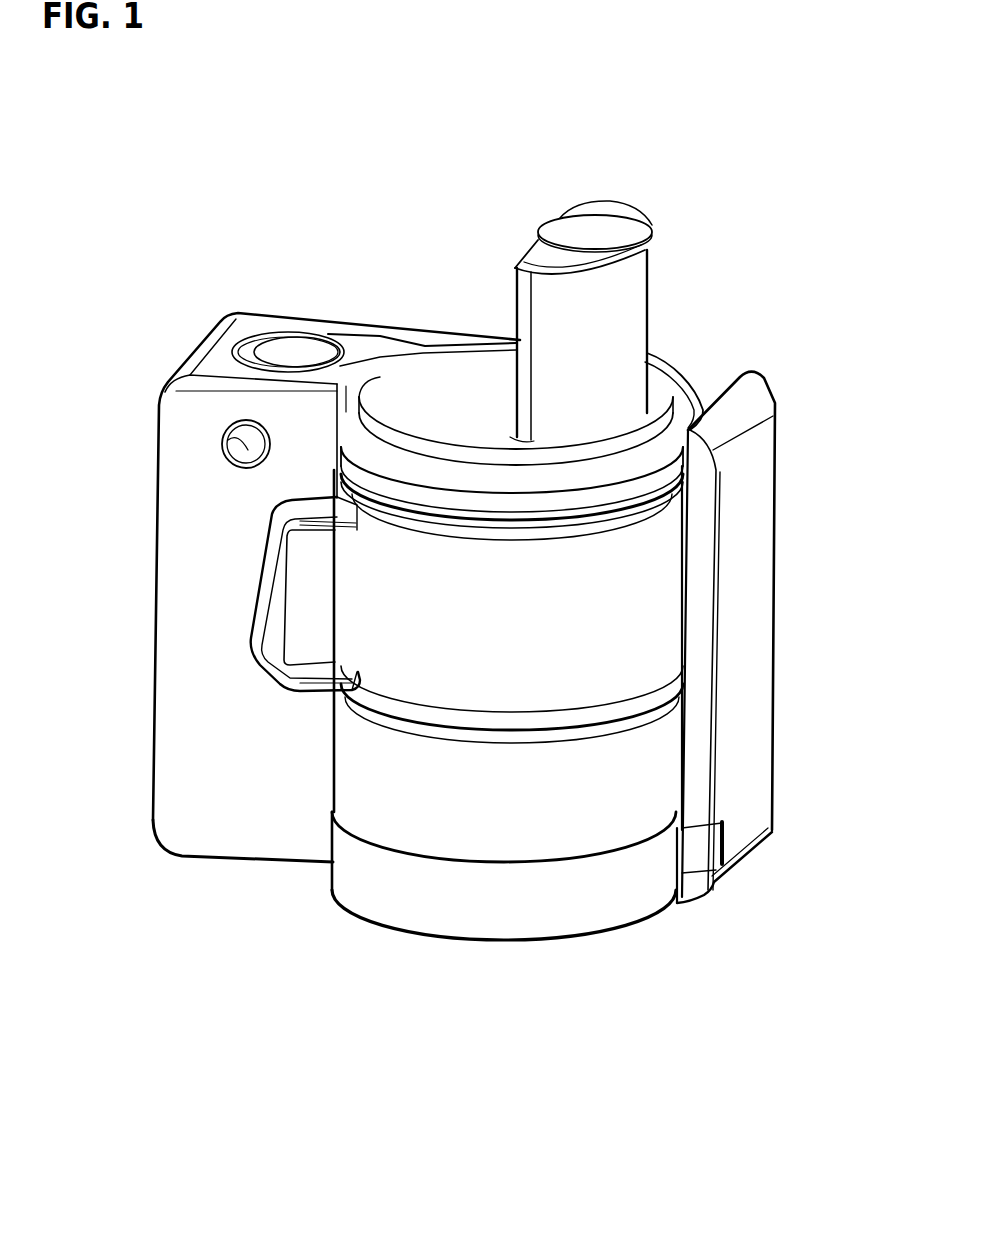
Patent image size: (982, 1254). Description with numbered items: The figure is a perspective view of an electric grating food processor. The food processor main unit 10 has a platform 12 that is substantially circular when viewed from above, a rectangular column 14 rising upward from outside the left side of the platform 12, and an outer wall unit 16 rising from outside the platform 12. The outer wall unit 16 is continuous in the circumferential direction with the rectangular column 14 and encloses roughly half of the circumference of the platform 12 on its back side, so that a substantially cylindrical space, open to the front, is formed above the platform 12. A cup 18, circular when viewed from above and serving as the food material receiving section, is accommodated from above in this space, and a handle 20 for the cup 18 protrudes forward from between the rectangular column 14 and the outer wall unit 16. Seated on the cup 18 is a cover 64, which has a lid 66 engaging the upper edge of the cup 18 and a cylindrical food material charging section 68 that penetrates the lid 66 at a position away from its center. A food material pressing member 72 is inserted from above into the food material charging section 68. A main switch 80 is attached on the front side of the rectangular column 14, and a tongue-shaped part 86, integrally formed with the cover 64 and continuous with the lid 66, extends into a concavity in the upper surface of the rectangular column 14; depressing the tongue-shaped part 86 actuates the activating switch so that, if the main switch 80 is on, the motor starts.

The food processor main unit 10 is at (574, 940).
The platform 12 is at (497, 837).
The rectangular column 14 is at (153, 747).
The outer wall unit 16 is at (692, 362).
The cup 18 is at (655, 611).
The handle 20 is at (262, 606).
The cover 64 is at (462, 347).
The lid 66 is at (500, 364).
The food material charging section 68 is at (650, 288).
The food material pressing member 72 is at (588, 207).
The main switch 80 is at (245, 447).
The tongue-shaped part 86 is at (305, 353).